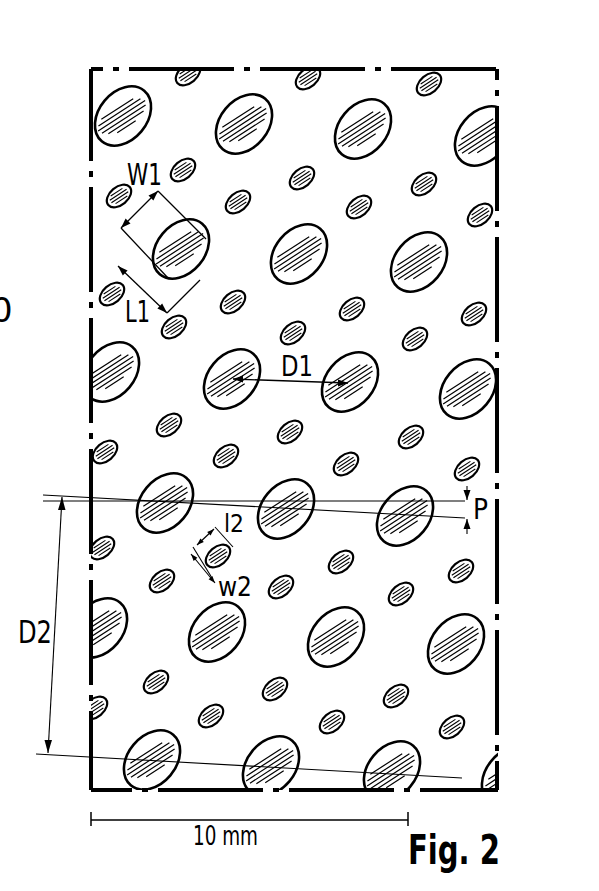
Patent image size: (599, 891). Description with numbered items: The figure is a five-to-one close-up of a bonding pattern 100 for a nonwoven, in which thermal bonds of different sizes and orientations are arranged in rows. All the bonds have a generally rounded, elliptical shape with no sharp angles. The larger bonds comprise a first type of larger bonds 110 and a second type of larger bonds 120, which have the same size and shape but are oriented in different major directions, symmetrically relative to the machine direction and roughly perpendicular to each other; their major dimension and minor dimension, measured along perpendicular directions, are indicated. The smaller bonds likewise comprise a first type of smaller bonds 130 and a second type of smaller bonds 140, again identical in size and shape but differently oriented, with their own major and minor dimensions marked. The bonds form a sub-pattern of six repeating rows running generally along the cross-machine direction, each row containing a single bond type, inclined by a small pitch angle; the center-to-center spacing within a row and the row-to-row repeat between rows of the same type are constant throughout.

The bonding pattern 100 is at (86, 254).
The first type of larger bonds 110 is at (222, 112).
The second type of larger bonds 120 is at (427, 283).
The first type of smaller bonds 130 is at (348, 208).
The second type of smaller bonds 140 is at (426, 180).